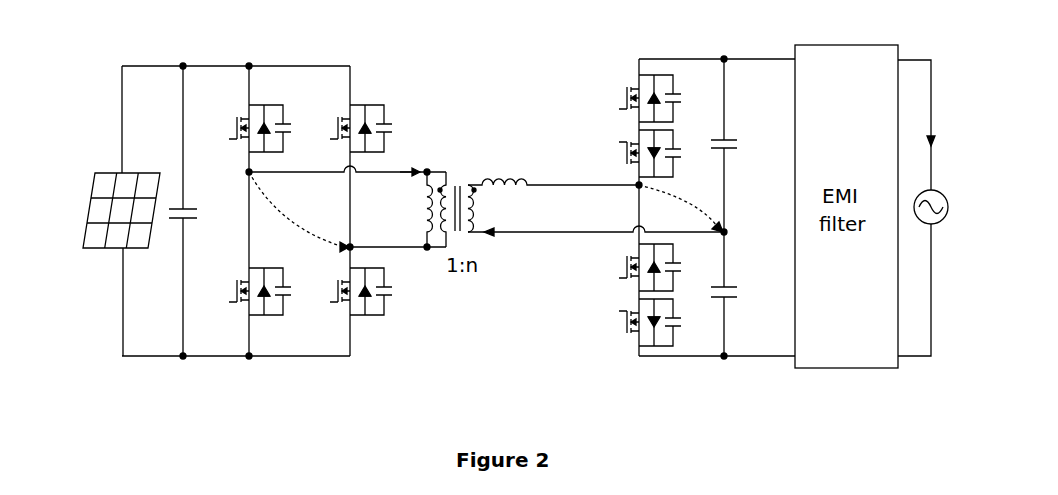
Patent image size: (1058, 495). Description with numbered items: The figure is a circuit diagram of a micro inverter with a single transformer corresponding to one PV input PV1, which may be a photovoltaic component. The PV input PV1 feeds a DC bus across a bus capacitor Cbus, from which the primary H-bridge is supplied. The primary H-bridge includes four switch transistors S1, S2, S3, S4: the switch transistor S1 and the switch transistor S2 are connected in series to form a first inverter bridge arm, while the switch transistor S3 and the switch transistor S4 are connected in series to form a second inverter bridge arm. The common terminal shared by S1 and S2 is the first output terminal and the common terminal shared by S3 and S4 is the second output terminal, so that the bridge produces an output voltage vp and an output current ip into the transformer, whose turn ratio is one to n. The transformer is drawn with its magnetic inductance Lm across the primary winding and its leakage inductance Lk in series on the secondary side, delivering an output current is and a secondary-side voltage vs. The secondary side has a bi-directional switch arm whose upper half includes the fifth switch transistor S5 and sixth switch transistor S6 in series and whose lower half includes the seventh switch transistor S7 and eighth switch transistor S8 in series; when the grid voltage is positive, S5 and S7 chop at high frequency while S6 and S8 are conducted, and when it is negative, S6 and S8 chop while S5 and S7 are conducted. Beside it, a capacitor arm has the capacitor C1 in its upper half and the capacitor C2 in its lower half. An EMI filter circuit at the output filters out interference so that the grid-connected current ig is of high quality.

The PV input PV1 is at (102, 210).
The bus capacitor Cbus is at (205, 211).
The switch transistor S1 is at (247, 119).
The switch transistor S2 is at (247, 264).
The switch transistor S3 is at (347, 156).
The switch transistor S4 is at (347, 301).
The fifth switch transistor S5 is at (634, 94).
The sixth switch transistor S6 is at (634, 157).
The seventh switch transistor S7 is at (634, 241).
The eighth switch transistor S8 is at (634, 327).
The magnetic inductance Lm is at (410, 209).
The leakage inductance Lk is at (553, 168).
The capacitor C1 is at (740, 145).
The capacitor C2 is at (740, 294).
The output current of the primary H-bridge ip is at (407, 158).
The output current of the transformer is is at (596, 219).
The output voltage of the primary H-bridge vp is at (299, 212).
The voltage on the secondary side of the transformer vs is at (681, 204).
The grid-connected current ig is at (937, 169).